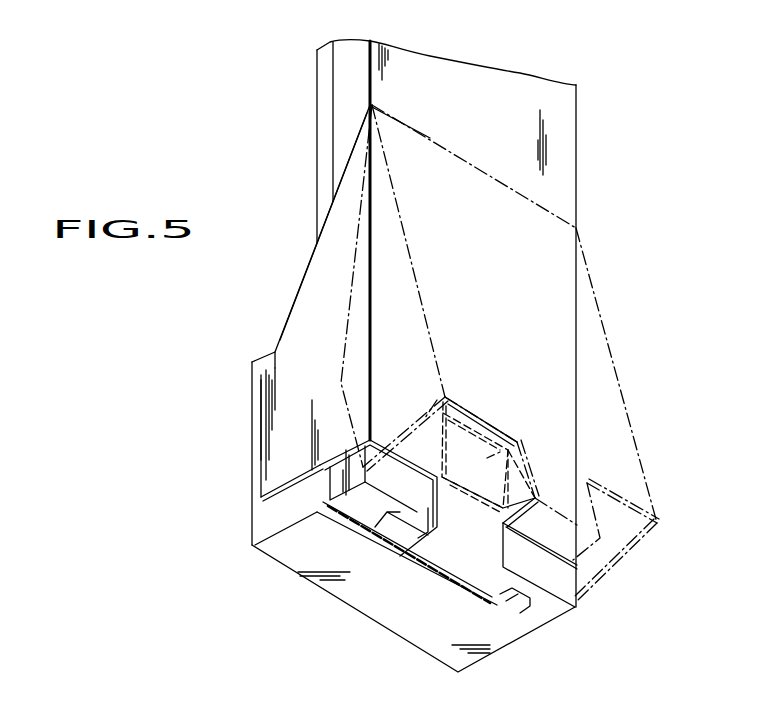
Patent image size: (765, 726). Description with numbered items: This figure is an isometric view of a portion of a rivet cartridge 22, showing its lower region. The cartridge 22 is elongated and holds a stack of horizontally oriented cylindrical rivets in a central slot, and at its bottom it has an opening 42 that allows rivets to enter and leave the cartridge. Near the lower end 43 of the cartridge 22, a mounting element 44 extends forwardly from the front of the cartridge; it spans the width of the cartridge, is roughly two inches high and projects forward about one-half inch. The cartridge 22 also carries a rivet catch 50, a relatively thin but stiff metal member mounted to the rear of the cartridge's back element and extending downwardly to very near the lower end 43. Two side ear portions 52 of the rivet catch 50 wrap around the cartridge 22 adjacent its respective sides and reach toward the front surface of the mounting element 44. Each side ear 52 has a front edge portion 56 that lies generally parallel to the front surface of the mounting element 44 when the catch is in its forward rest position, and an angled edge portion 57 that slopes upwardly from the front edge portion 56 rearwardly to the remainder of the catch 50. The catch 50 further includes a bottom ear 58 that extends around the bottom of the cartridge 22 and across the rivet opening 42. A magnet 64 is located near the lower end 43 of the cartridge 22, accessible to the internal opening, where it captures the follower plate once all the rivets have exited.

The cartridge 22 is at (317, 112).
The opening 42 is at (522, 598).
The lower end 43 is at (575, 606).
The mounting element 44 is at (263, 517).
The rivet catch 50 is at (309, 303).
The side ear portions 52 is at (261, 392).
The front edge portion 56 is at (262, 430).
The angled edge portion 57 is at (312, 262).
The bottom ear 58 is at (455, 557).
The magnet 64 is at (520, 438).